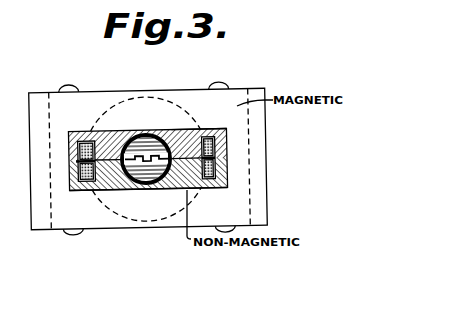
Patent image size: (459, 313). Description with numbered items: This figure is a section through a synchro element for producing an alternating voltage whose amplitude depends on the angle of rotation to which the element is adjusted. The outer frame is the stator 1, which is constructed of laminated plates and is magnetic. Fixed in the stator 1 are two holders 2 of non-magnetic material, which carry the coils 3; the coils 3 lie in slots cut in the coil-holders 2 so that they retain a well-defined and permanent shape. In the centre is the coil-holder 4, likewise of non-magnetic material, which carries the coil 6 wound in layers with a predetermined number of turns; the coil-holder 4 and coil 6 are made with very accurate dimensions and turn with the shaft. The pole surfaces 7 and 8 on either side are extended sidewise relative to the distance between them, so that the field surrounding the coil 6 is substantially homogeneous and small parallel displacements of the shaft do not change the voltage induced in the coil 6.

The stator 1 is at (38, 119).
The coil-holders 2 is at (223, 142).
The coils 3 is at (70, 168).
The coil-holder 4 is at (138, 132).
The coil 6 is at (180, 129).
The pole surface 7 is at (118, 132).
The pole surface 8 is at (114, 191).